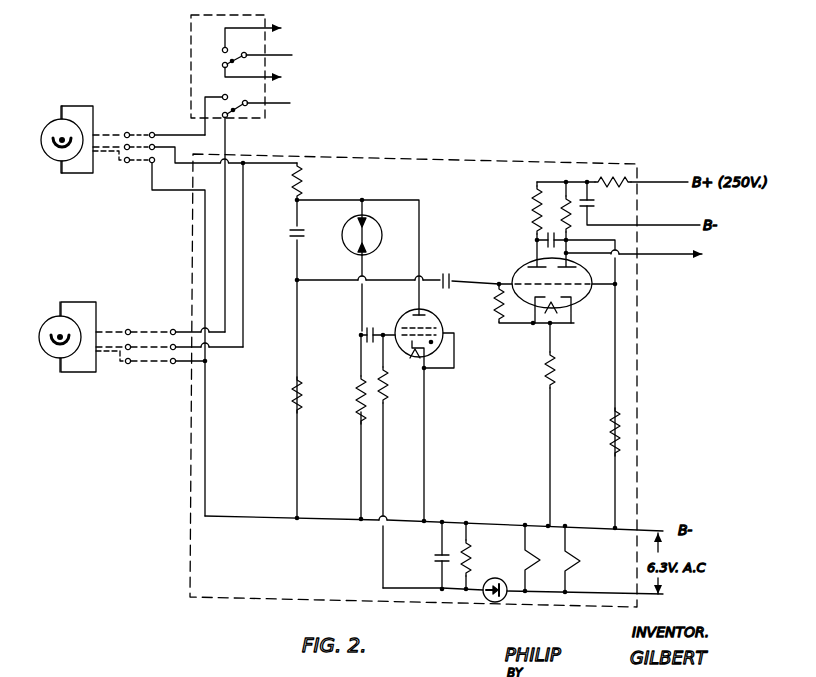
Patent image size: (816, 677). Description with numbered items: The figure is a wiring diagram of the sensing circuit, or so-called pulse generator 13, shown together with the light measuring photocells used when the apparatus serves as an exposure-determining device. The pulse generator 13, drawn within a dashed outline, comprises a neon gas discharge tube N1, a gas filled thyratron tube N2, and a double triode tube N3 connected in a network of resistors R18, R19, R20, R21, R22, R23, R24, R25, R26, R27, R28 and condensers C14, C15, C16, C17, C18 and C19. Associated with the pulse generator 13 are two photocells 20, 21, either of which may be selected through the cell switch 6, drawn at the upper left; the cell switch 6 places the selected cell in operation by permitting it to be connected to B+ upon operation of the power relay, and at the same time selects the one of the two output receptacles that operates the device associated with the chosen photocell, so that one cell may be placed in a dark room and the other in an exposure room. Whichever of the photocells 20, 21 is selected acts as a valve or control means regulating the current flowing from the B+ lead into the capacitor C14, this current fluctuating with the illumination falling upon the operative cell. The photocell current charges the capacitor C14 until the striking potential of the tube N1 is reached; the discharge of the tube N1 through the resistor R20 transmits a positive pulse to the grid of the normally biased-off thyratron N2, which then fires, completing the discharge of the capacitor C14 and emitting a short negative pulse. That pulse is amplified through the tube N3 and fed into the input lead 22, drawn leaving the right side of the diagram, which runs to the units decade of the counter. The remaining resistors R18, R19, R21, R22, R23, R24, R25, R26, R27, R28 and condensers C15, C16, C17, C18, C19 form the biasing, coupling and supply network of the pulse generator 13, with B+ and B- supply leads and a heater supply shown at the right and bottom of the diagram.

The cell switch 6 is at (187, 91).
The pulse generator 13 is at (186, 531).
The photocell 20 is at (43, 133).
The photocell 21 is at (44, 332).
The input lead 22 is at (649, 262).
The resistor R18 is at (294, 184).
The resistor R19 is at (295, 387).
The resistor R20 is at (359, 391).
The resistor R21 is at (386, 386).
The resistor R22 is at (497, 320).
The resistor R23 is at (546, 364).
The resistor R24 is at (533, 205).
The resistor R25 is at (560, 190).
The resistor R26 is at (612, 176).
The resistor R27 is at (611, 425).
The resistor R28 is at (470, 567).
The capacitor C14 is at (291, 236).
The condenser C15 is at (366, 333).
The condenser C16 is at (449, 272).
The condenser C17 is at (543, 229).
The condenser C18 is at (594, 206).
The condenser C19 is at (436, 558).
The neon gas discharge tube N1 is at (381, 220).
The gas filled thyratron tube N2 is at (440, 322).
The double triode tube N3 is at (529, 262).